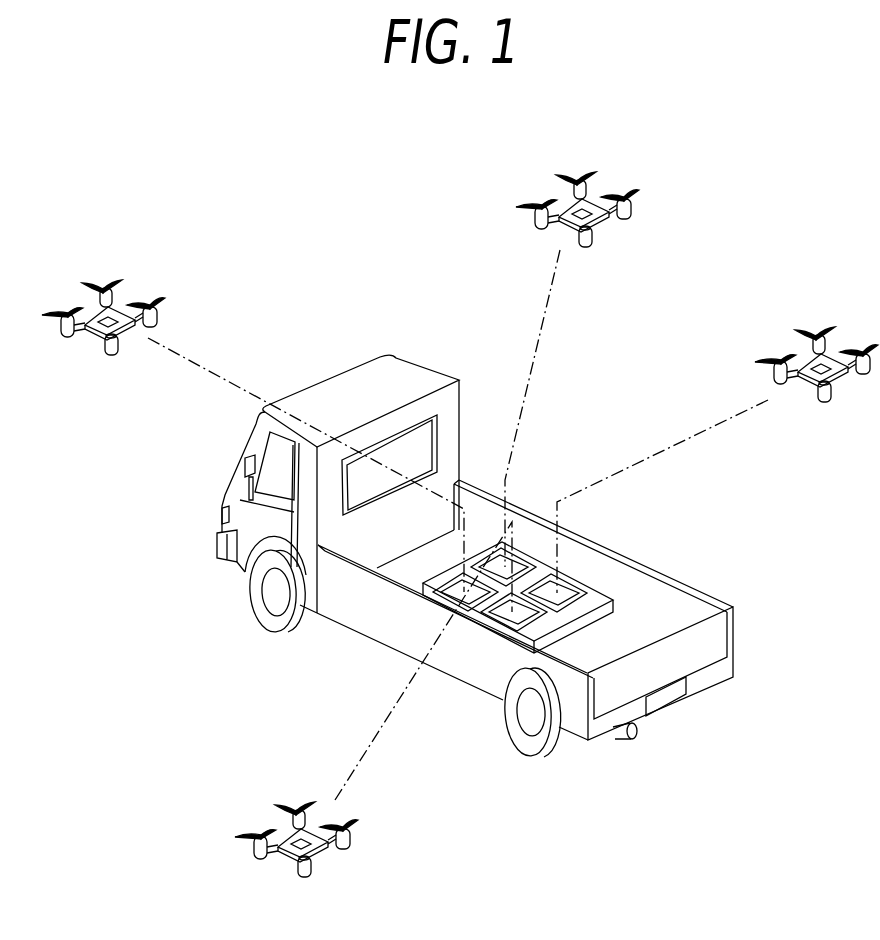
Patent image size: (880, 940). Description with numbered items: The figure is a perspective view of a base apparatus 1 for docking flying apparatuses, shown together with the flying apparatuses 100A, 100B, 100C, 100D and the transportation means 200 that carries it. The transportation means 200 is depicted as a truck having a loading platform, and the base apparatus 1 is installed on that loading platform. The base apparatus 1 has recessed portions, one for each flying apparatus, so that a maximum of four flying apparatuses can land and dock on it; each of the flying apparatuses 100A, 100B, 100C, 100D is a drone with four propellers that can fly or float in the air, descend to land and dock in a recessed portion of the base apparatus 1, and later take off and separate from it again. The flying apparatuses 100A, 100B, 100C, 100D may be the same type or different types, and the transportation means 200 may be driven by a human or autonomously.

The base apparatus 1 is at (581, 578).
The transportation means 200 is at (475, 529).
The flying apparatus 100A is at (133, 290).
The flying apparatus 100B is at (550, 187).
The flying apparatus 100C is at (788, 342).
The flying apparatus 100D is at (330, 864).